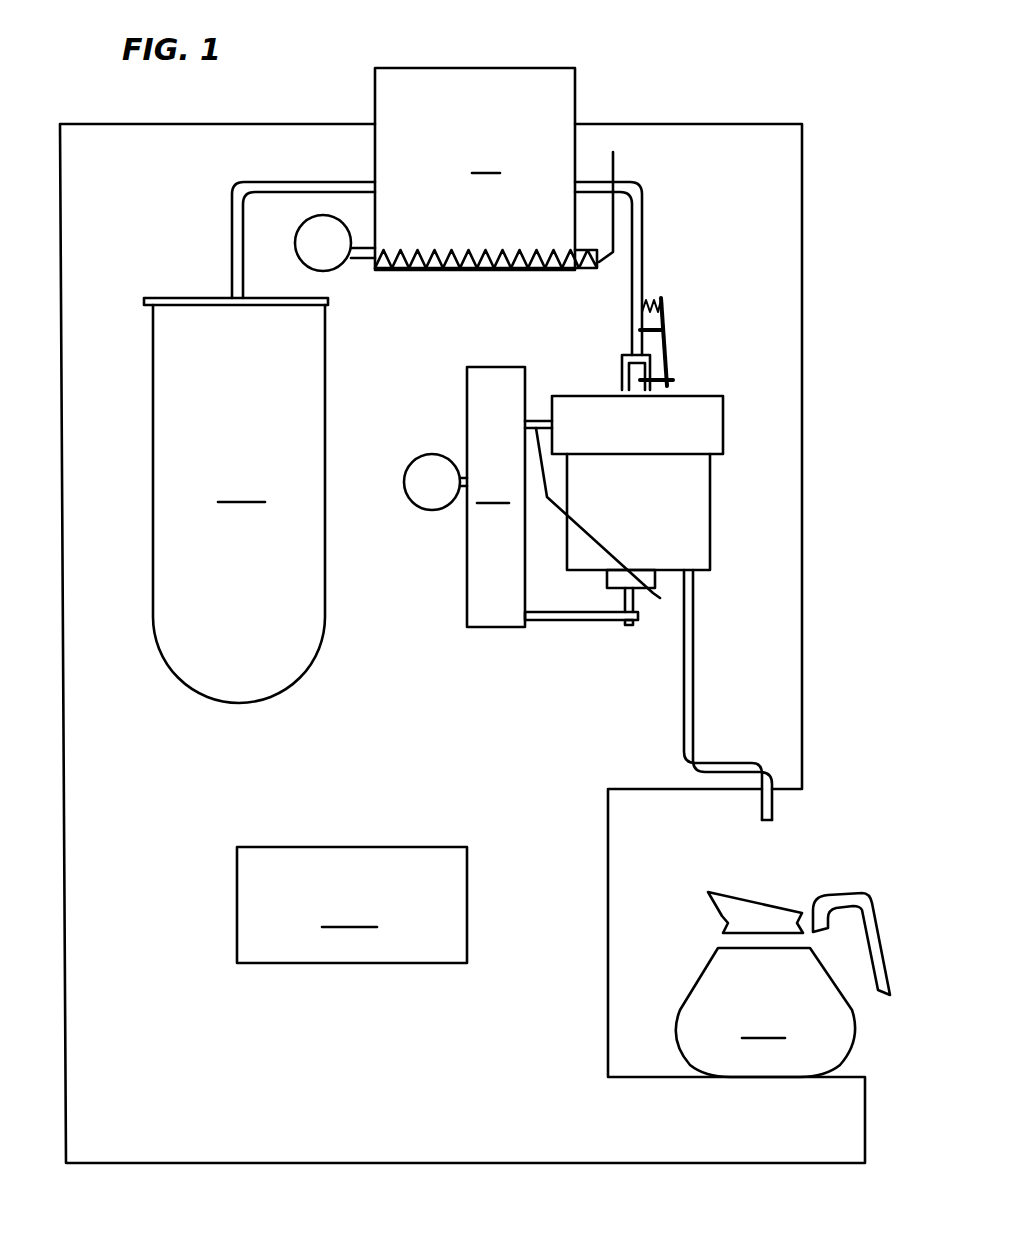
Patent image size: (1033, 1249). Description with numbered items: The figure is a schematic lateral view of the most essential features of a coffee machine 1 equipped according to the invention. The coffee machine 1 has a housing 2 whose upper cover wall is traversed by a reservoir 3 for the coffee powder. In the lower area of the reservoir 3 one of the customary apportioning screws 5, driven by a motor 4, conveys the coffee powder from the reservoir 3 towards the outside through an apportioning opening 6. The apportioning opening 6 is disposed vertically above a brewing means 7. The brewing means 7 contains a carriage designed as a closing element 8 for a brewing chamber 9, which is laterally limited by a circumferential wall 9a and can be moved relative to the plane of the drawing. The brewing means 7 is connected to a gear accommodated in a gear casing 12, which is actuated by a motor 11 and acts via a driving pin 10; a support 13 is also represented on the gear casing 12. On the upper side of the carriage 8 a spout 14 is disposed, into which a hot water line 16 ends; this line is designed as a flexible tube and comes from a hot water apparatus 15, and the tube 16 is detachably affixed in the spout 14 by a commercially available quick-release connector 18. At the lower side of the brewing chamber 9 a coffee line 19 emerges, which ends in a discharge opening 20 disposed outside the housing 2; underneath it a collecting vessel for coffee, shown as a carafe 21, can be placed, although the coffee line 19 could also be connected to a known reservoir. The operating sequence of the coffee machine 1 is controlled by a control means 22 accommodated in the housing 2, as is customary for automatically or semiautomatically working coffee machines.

The coffee machine 1 is at (716, 100).
The housing 2 is at (802, 173).
The reservoir 3 is at (475, 169).
The motor 4 is at (327, 267).
The apportioning screw 5 is at (437, 262).
The apportioning opening 6 is at (613, 152).
The brewing means 7 is at (775, 481).
The carriage 8 is at (698, 426).
The brewing chamber 9 is at (690, 542).
The circumferential wall 9a is at (673, 557).
The driving pin 10 is at (660, 598).
The motor 11 is at (427, 503).
The gear casing 12 is at (509, 497).
The support 13 is at (593, 616).
The spout 14 is at (633, 391).
The hot water apparatus 15 is at (236, 500).
The hot water line 16 is at (259, 185).
The quick-release connector 18 is at (664, 350).
The coffee line 19 is at (688, 710).
The discharge opening 20 is at (770, 808).
The carafe 21 is at (783, 984).
The control means 22 is at (352, 905).